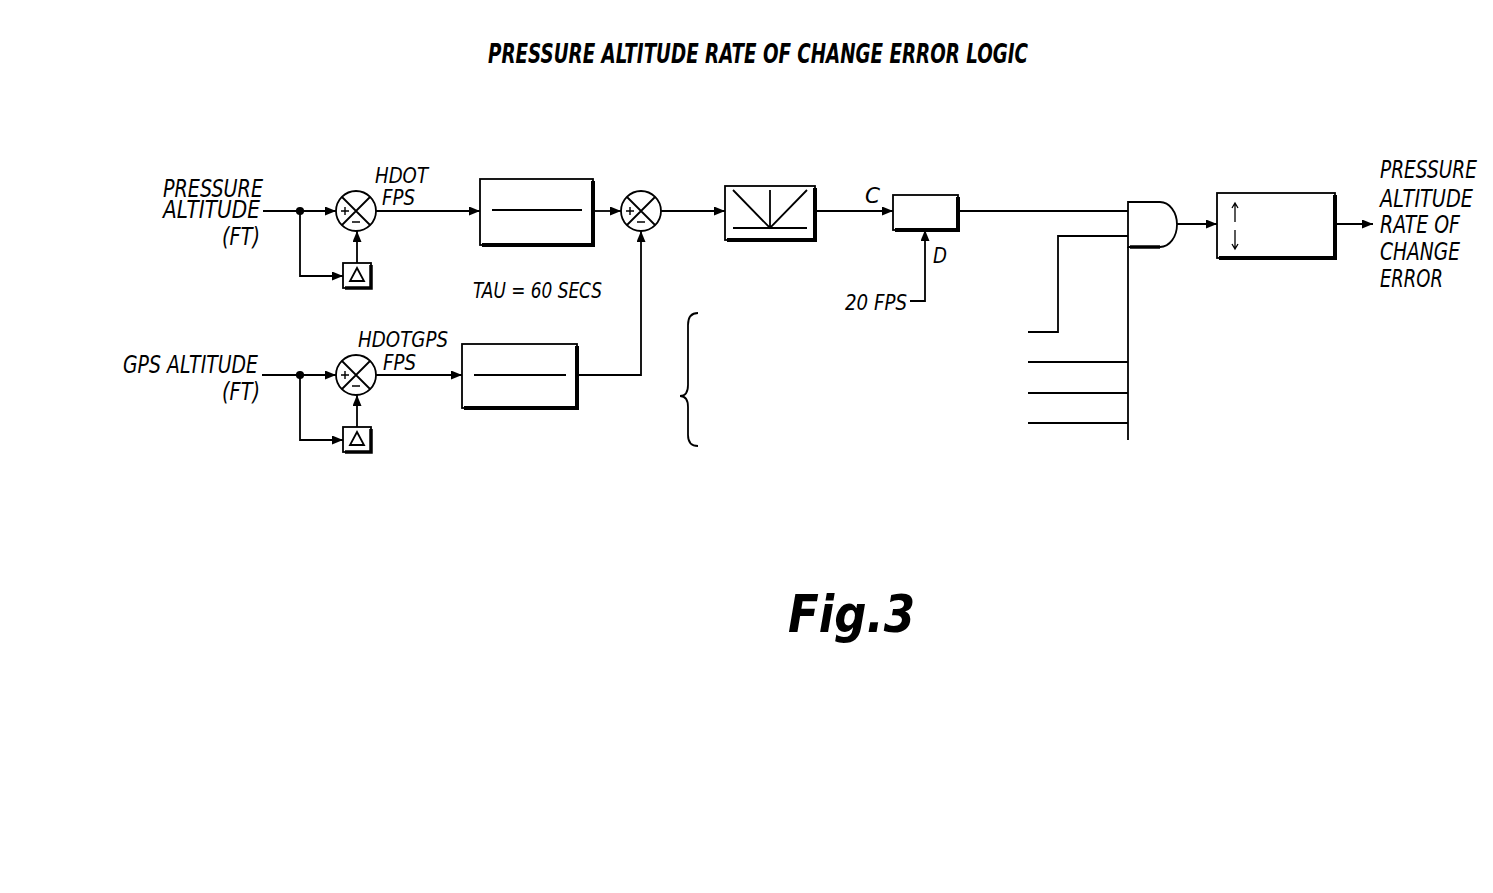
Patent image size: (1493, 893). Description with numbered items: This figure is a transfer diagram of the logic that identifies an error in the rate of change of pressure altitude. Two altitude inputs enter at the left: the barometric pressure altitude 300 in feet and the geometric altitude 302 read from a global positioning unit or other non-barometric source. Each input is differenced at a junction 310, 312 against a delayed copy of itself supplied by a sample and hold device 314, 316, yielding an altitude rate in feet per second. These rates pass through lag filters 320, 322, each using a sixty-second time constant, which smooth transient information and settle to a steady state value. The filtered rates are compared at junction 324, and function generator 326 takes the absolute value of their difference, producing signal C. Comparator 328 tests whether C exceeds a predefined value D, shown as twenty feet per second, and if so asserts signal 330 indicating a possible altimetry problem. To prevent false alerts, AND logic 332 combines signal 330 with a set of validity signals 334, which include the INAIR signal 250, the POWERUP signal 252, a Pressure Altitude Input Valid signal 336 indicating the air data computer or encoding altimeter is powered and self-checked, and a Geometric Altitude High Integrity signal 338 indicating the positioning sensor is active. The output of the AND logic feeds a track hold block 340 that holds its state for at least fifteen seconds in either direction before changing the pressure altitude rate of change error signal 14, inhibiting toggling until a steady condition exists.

The pressure altitude rate of change error signal 14 is at (1345, 222).
The INAIR signal 250 is at (1108, 393).
The POWERUP signal 252 is at (1088, 423).
The pressure altitude 300 is at (280, 211).
The geometric altitude 302 is at (280, 375).
The junction 310 is at (368, 226).
The junction 312 is at (368, 390).
The sample and hold device 314 is at (371, 276).
The sample and hold device 316 is at (371, 440).
The filter 320 is at (594, 190).
The filter 322 is at (550, 408).
The junction 324 is at (654, 226).
The function generator 326 is at (725, 190).
The comparator 328 is at (893, 228).
The signal 330 is at (1104, 211).
The AND logic 332 is at (1162, 238).
The signals 334 is at (670, 379).
The Pressure Altitude Input Valid signal 336 is at (1115, 362).
The Geometric Altitude High Integrity signal 338 is at (1128, 238).
The 15 second persistence block 340 is at (1276, 193).